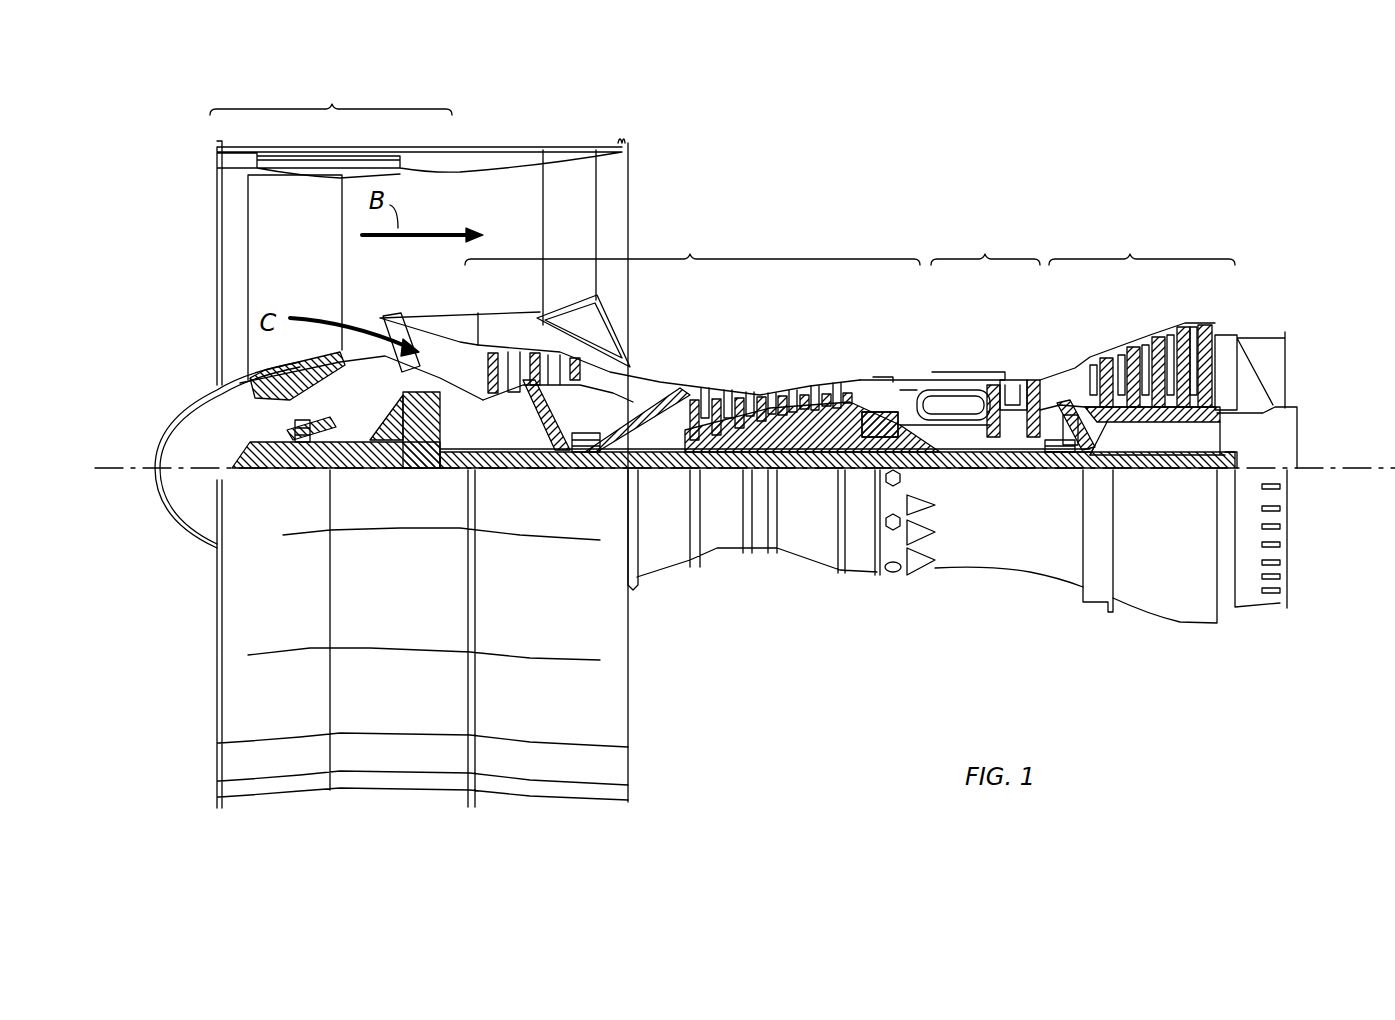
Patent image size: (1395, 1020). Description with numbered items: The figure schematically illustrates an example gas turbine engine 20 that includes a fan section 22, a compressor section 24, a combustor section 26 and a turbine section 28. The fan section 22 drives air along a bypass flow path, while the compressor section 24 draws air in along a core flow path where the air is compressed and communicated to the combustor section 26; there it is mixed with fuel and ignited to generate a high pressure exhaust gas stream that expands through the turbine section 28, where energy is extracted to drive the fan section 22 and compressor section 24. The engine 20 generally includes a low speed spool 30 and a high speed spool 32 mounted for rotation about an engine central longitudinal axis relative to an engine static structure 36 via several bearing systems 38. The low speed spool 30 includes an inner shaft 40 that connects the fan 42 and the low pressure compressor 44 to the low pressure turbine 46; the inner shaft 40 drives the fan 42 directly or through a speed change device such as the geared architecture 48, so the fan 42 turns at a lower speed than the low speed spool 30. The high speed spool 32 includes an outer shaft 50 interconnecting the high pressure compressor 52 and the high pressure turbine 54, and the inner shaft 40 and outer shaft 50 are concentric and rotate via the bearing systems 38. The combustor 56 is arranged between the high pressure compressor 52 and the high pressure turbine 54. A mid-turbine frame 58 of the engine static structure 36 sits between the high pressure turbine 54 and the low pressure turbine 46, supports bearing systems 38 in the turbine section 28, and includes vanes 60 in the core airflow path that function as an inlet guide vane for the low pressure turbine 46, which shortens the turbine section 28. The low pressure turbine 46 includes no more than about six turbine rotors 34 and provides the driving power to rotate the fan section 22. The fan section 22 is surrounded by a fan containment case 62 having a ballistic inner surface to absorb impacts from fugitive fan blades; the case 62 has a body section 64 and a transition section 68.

The gas turbine engine 20 is at (950, 204).
The fan section 22 is at (331, 96).
The compressor section 24 is at (692, 245).
The combustor section 26 is at (985, 245).
The turbine section 28 is at (1142, 245).
The low speed spool 30 is at (803, 493).
The high speed spool 32 is at (853, 440).
The turbine rotors 34 is at (1157, 417).
The engine static structure 36 is at (851, 566).
The bearing systems 38 is at (303, 437).
The inner shaft 40 is at (651, 478).
The fan 42 is at (278, 288).
The low pressure compressor section 44 is at (583, 322).
The low pressure turbine section 46 is at (1157, 348).
The geared architecture 48 is at (430, 448).
The outer shaft 50 is at (956, 467).
The high pressure compressor section 52 is at (778, 440).
The high pressure turbine section 54 is at (1013, 380).
The combustor 56 is at (937, 403).
The mid-turbine frame 58 is at (1074, 358).
The vanes 60 is at (1098, 415).
The fan containment case 62 is at (466, 140).
The body section 64 is at (1255, 332).
The transition section 68 is at (405, 308).